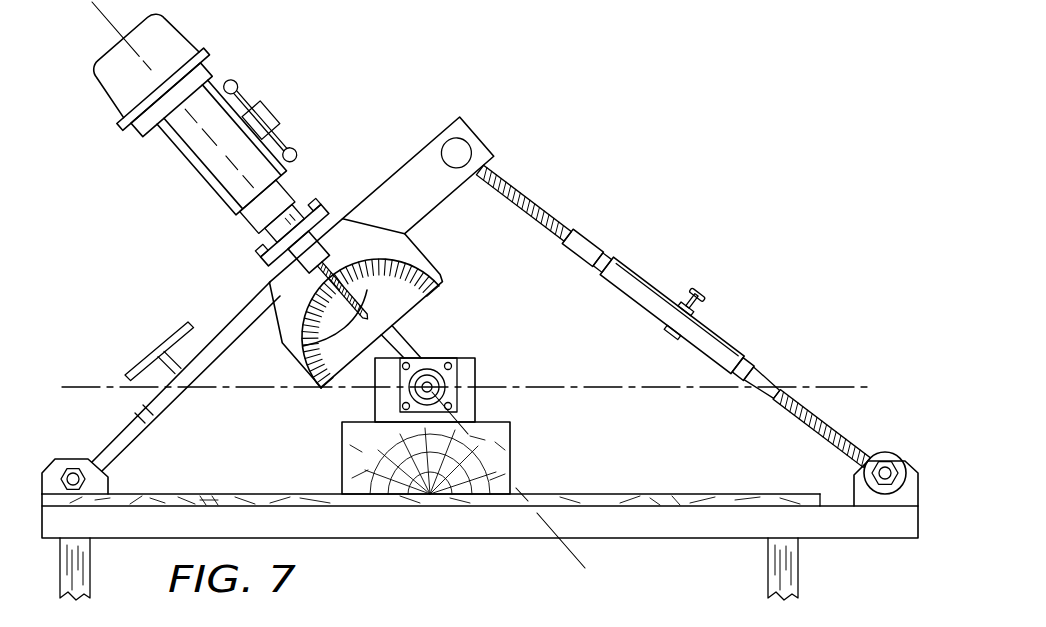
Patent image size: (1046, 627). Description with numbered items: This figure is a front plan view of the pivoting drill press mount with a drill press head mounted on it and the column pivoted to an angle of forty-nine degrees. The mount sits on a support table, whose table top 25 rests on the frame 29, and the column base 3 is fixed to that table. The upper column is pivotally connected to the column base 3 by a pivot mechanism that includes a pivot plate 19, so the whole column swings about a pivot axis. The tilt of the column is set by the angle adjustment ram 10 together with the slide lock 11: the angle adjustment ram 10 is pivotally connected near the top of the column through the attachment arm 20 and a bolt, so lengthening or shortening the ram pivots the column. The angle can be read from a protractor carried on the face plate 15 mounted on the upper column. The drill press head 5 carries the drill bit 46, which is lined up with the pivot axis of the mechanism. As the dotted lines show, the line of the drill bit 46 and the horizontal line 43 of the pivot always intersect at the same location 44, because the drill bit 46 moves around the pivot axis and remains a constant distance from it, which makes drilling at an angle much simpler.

The column base 3 is at (477, 375).
The power drill 5 is at (302, 188).
The angle adjustment ram 10 is at (651, 279).
The slide lock 11 is at (222, 328).
The face plate 15 is at (427, 260).
The pivot plate 19 is at (410, 337).
The attachment arm 20 is at (476, 122).
The table top 25 is at (287, 494).
The frame 29 is at (643, 528).
The horizontal line 43 is at (832, 387).
The intersection location 44 is at (424, 389).
The drill bit 46 is at (297, 353).